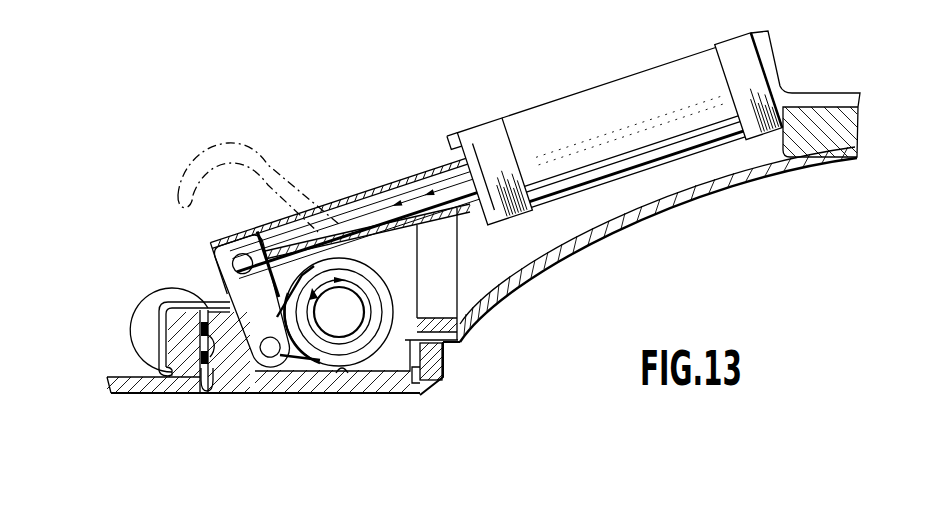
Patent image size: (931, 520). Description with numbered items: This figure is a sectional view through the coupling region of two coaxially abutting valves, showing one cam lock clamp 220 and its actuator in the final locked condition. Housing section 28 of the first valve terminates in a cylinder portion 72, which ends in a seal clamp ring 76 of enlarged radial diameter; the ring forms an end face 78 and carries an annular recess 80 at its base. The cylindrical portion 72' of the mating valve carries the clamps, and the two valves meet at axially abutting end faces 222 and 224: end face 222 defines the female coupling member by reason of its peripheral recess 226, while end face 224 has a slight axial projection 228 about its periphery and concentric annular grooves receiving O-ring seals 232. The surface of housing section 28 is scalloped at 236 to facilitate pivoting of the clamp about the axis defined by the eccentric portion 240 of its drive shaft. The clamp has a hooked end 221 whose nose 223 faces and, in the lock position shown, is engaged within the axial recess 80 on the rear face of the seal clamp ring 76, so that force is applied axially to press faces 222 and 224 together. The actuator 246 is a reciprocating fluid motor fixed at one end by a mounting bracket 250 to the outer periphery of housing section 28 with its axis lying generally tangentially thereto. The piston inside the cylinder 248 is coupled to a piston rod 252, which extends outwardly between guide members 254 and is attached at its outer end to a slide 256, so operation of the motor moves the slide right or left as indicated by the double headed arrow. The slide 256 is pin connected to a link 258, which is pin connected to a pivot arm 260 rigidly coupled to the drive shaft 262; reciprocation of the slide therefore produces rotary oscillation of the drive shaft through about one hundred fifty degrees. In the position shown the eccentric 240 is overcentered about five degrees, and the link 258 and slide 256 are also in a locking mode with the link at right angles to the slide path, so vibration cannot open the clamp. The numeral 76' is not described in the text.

The housing section 28 is at (641, 200).
The cylinder portion 72 is at (263, 397).
The cylindrical portion 72' is at (432, 382).
The seal clamp ring 76 is at (190, 330).
The cross member body 76' is at (326, 380).
The end face 78 is at (158, 370).
The annular recess 80 is at (178, 392).
The cam lock clamp 220 is at (160, 300).
The hooked end 221 is at (138, 336).
The end face 222 is at (226, 281).
The nose 223 is at (172, 380).
The end face 224 is at (214, 386).
The peripheral recess 226 is at (212, 382).
The axial projection 228 is at (217, 260).
The O-ring seal 232 is at (162, 318).
The scalloped surface 236 is at (346, 374).
The eccentric portion 240 is at (377, 285).
The actuator 246 is at (545, 100).
The cylinder 248 is at (699, 52).
The mounting bracket 250 is at (780, 61).
The piston rod 252 is at (462, 158).
The guide member 254 is at (399, 180).
The slide 256 is at (283, 216).
The link 258 is at (263, 302).
The pivot arm 260 is at (297, 370).
The drive shaft 262 is at (353, 305).